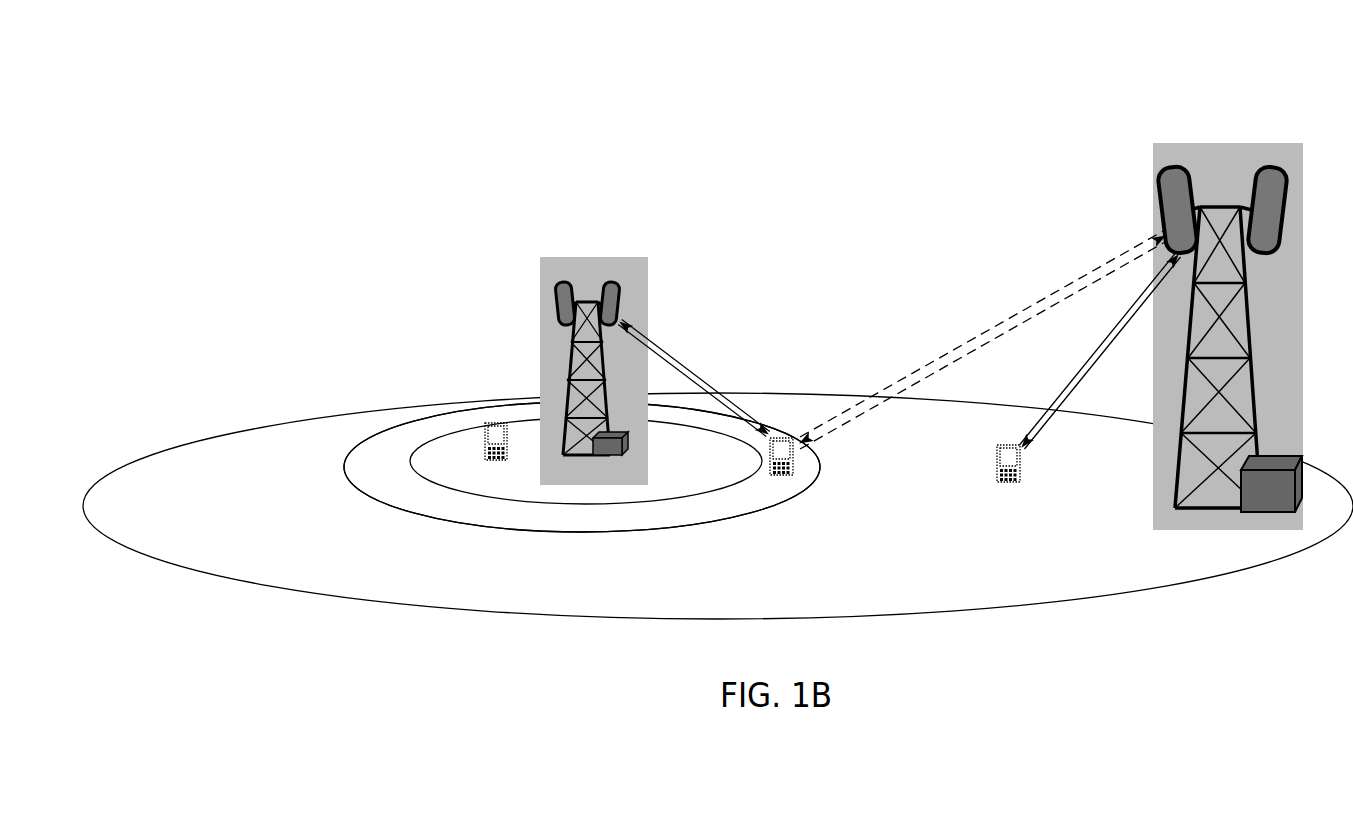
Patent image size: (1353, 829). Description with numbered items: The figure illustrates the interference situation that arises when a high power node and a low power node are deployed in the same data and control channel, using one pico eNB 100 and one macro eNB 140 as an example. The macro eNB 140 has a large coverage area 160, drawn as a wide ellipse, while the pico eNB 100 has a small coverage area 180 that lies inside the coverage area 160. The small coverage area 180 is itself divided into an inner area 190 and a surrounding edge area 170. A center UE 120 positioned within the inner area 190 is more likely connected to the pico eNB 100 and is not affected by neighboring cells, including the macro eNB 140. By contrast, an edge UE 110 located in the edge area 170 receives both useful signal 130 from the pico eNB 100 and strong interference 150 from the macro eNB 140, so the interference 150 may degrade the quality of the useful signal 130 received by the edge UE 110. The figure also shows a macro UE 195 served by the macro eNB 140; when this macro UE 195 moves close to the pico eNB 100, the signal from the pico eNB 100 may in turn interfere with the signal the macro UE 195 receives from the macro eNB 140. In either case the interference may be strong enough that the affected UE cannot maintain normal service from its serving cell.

The pico eNB 100 is at (549, 243).
The edge UE 110 is at (795, 465).
The center UE 120 is at (480, 440).
The useful signal 130 is at (859, 347).
The macro eNB 140 is at (1256, 136).
The interference 150 is at (1145, 386).
The coverage area 160 is at (245, 580).
The edge area 170 is at (375, 478).
The coverage area 180 is at (595, 540).
The inner area 190 is at (510, 480).
The macro UE 195 is at (1022, 473).